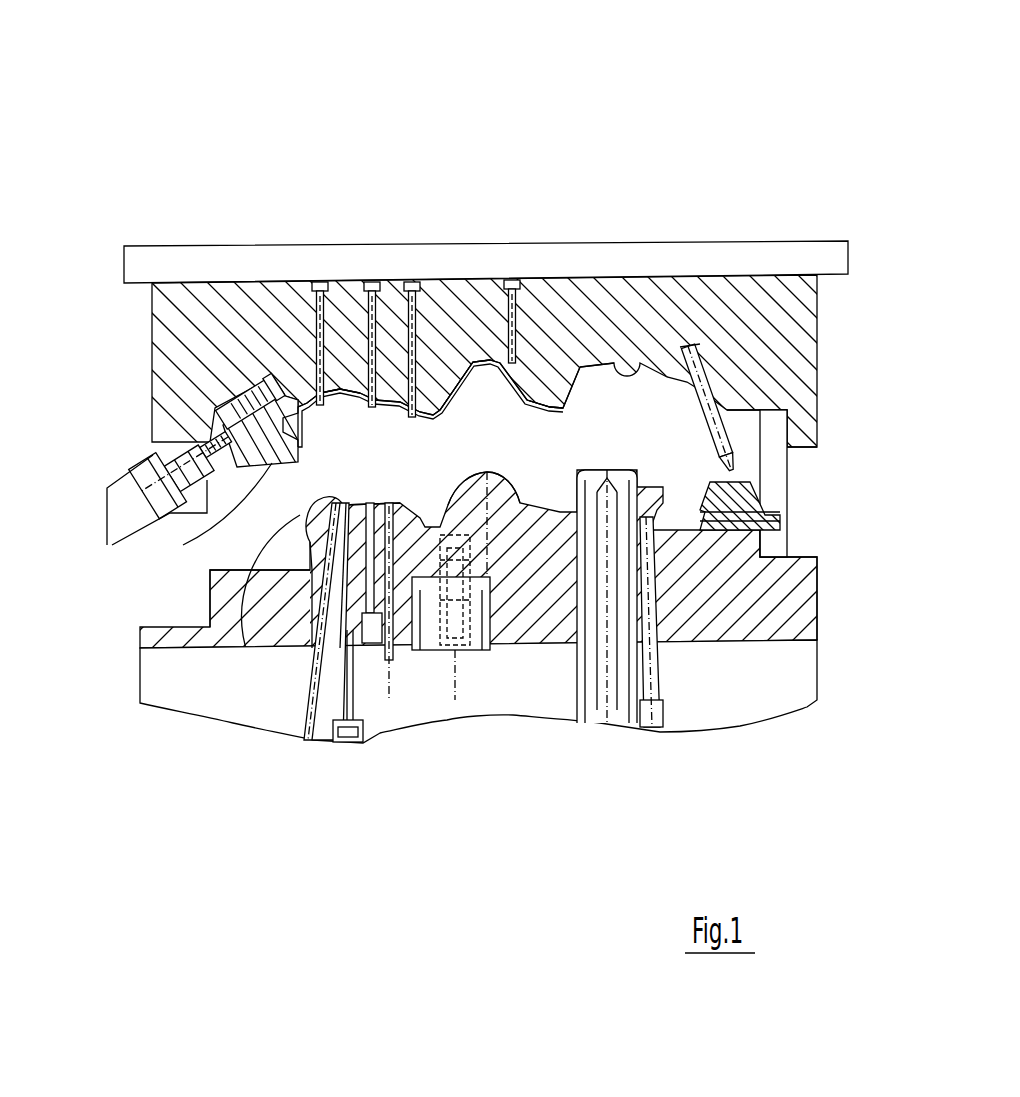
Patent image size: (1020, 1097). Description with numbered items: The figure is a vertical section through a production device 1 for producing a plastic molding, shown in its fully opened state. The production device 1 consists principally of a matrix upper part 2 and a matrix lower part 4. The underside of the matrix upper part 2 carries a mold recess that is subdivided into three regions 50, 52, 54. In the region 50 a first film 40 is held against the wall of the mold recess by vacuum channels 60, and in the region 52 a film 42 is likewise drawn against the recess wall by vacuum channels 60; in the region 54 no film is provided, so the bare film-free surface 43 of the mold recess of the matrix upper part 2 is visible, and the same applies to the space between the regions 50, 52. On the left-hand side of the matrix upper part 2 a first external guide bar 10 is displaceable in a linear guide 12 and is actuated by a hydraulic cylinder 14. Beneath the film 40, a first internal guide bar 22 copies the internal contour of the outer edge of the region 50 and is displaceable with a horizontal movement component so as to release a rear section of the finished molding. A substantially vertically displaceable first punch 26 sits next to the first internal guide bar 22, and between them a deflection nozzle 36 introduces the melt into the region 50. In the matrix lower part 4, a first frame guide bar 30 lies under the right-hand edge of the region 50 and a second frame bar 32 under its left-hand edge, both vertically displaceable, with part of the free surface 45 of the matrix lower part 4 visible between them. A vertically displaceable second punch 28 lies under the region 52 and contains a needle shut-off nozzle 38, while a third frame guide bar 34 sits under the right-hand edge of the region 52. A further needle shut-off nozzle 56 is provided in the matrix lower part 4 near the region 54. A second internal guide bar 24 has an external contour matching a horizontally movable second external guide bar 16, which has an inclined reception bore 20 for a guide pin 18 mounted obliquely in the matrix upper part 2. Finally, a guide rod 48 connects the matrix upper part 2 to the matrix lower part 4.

The production device 1 is at (118, 106).
The matrix upper part 2 is at (240, 310).
The matrix lower part 4 is at (241, 625).
The first external guide bar 10 is at (306, 522).
The linear guide 12 is at (165, 372).
The hydraulic cylinder 14 is at (207, 442).
The second external guide bar 16 is at (773, 534).
The guide pin 18 is at (742, 392).
The inclined reception bore 20 is at (735, 470).
The first internal guide bar 22 is at (312, 540).
The second internal guide bar 24 is at (712, 556).
The first punch 26 is at (250, 605).
The second punch 28 is at (488, 703).
The first frame guide bar 30 is at (362, 700).
The second frame bar 32 is at (387, 720).
The third frame guide bar 34 is at (538, 703).
The deflection nozzle 36 is at (313, 577).
The needle shut-off nozzle 38 is at (467, 703).
The first film 40 is at (298, 392).
The film 42 is at (552, 335).
The film-free surface 43 is at (618, 360).
The free surface 45 is at (312, 733).
The guide rod 48 is at (773, 460).
The region 50 is at (348, 424).
The region 52 is at (467, 423).
The region 54 is at (613, 389).
The needle shut-off nozzle 56 is at (633, 700).
The vacuum channels 60 is at (428, 305).